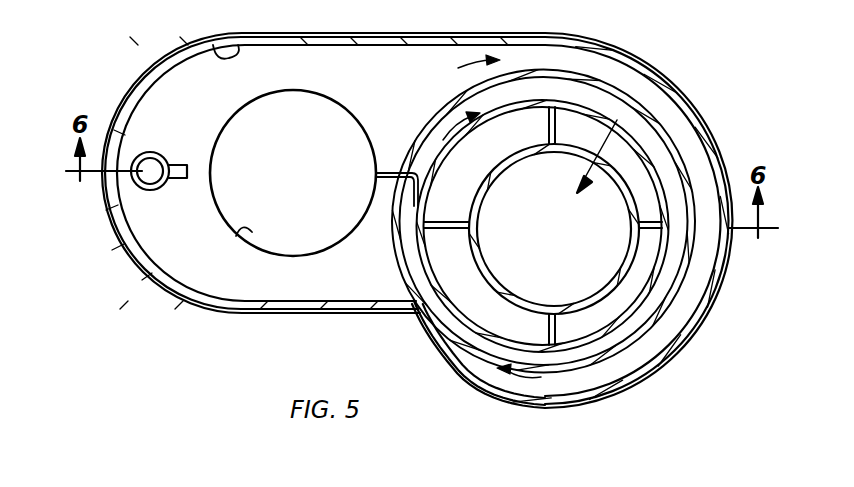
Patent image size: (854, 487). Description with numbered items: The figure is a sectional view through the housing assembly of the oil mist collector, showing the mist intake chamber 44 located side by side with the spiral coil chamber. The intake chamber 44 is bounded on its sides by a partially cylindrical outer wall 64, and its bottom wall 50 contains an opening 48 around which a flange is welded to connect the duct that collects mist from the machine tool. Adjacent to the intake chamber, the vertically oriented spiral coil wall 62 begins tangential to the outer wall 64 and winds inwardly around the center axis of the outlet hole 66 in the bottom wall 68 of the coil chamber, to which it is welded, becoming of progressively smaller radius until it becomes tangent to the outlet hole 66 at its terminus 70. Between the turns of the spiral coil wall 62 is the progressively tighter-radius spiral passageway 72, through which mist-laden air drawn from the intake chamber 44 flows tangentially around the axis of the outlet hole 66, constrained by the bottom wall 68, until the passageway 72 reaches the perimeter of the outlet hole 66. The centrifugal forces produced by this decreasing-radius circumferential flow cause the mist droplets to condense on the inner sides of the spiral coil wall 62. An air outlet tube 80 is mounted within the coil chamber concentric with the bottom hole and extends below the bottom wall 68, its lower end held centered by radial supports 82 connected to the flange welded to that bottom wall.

The mist intake chamber 44 is at (167, 88).
The opening 48 is at (240, 233).
The bottom wall 50 is at (386, 87).
The spiral coil wall 62 is at (727, 197).
The outer wall 64 is at (199, 37).
The outlet hole 66 is at (612, 120).
The bottom wall 68 is at (705, 277).
The terminus 70 is at (550, 104).
The spiral passageway 72 is at (648, 102).
The air outlet tube 80 is at (610, 320).
The radial supports 82 is at (420, 190).